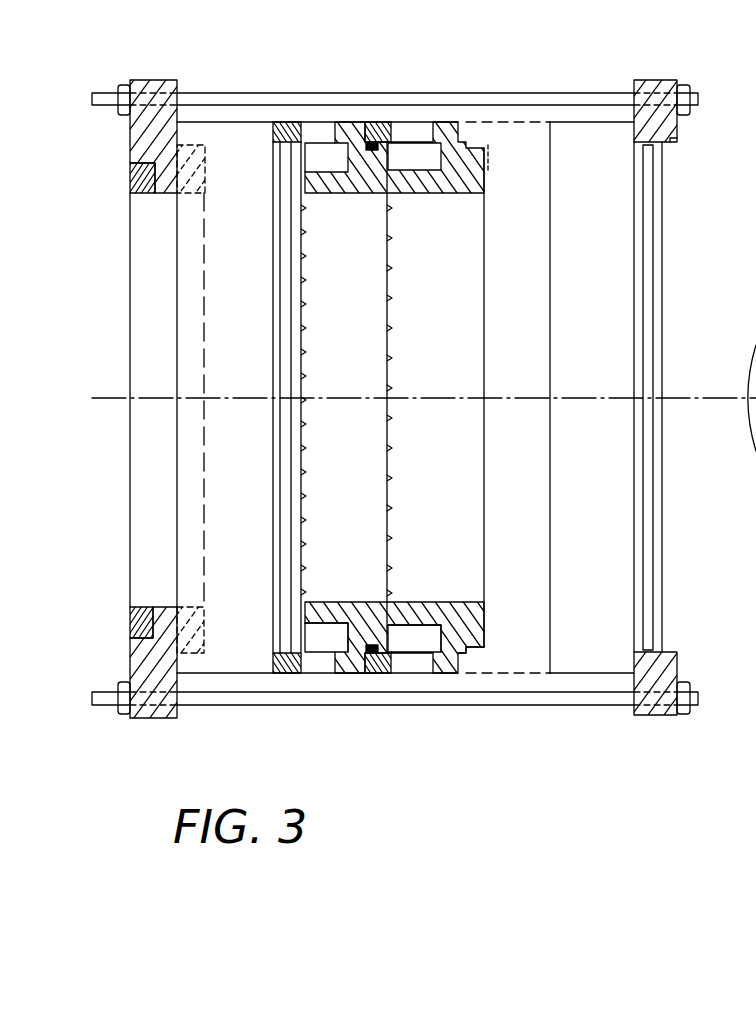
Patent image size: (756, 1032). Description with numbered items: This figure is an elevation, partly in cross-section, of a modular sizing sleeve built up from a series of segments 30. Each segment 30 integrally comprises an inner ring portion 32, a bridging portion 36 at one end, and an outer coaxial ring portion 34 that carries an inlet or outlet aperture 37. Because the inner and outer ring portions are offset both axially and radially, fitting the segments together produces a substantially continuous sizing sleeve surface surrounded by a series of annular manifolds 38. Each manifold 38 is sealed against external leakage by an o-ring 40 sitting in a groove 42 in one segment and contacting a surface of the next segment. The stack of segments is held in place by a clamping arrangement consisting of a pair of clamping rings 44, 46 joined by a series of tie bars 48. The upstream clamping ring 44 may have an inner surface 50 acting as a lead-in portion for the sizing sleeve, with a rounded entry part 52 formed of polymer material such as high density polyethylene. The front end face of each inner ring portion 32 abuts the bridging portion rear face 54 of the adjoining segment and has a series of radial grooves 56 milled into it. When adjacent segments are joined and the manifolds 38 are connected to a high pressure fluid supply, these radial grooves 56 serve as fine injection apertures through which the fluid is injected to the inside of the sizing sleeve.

The segment 30 is at (298, 682).
The inner ring portion 32 is at (327, 622).
The outer coaxial ring portion 34 is at (327, 653).
The bridging portion 36 is at (453, 613).
The inlet or outlet aperture 37 is at (318, 135).
The annular manifold 38 is at (427, 650).
The o-ring 40 is at (370, 655).
The groove 42 is at (478, 648).
The upstream clamping ring 44 is at (130, 663).
The clamping ring 46 is at (667, 668).
The tie bar 48 is at (585, 695).
The inner surface 50 is at (170, 607).
The rounded entry part 52 is at (138, 608).
The bridging portion rear face 54 is at (487, 623).
The radial groove 56 is at (387, 535).